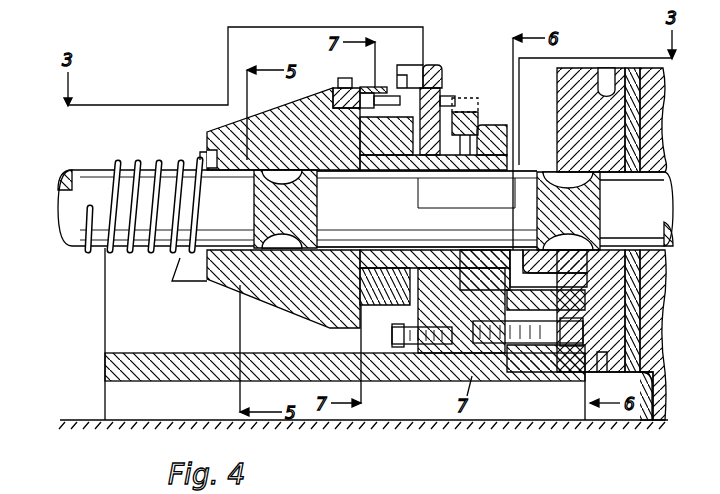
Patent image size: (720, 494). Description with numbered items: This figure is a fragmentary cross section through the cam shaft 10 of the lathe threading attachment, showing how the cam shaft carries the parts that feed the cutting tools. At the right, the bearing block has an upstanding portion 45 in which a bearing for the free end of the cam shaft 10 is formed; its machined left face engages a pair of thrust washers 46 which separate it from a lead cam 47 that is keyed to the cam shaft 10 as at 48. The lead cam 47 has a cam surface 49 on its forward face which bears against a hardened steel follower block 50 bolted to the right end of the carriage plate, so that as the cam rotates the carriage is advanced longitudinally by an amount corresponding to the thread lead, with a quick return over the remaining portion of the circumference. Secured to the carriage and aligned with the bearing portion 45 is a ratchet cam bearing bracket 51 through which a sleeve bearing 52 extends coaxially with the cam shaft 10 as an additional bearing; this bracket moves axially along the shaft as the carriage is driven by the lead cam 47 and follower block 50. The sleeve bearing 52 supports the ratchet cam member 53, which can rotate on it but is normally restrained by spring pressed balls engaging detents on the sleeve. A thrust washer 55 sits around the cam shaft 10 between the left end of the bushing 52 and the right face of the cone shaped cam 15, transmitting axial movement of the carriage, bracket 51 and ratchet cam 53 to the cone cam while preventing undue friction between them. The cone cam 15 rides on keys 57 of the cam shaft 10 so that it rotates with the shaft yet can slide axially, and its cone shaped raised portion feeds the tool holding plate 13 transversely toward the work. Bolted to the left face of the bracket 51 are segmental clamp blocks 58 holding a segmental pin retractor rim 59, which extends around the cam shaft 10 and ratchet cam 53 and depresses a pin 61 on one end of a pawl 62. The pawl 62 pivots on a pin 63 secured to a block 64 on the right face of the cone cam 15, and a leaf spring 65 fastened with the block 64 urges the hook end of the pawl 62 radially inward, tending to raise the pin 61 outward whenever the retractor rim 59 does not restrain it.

The cam shaft 10 is at (86, 178).
The tool holding plate 13 is at (138, 171).
The cone shaped cam 15 is at (290, 306).
The upstanding portion 45 is at (653, 68).
The thrust washers 46 is at (636, 68).
The lead cam 47 is at (574, 68).
The key 48 is at (557, 152).
The cam surface 49 is at (557, 90).
The follower block 50 is at (548, 366).
The ratchet cam bearing bracket 51 is at (440, 94).
The sleeve bearing 52 is at (484, 178).
The ratchet cam member 53 is at (372, 308).
The thrust washer 55 is at (370, 172).
The keys 57 is at (256, 190).
The segmental clamp blocks 58 is at (427, 68).
The segmental pin retractor rim 59 is at (400, 66).
The pin 61 is at (456, 99).
The pawl 62 is at (380, 86).
The pin 63 is at (478, 113).
The block 64 is at (334, 90).
The leaf spring 65 is at (364, 92).